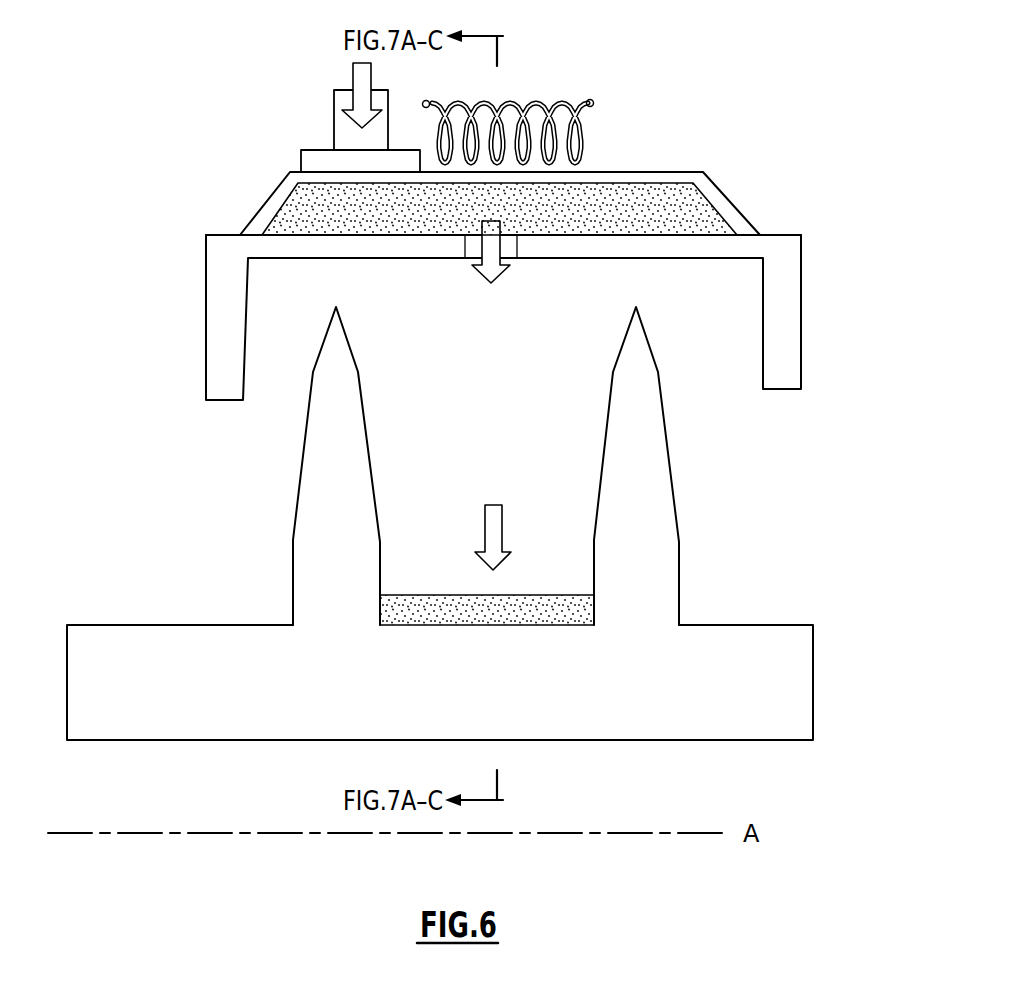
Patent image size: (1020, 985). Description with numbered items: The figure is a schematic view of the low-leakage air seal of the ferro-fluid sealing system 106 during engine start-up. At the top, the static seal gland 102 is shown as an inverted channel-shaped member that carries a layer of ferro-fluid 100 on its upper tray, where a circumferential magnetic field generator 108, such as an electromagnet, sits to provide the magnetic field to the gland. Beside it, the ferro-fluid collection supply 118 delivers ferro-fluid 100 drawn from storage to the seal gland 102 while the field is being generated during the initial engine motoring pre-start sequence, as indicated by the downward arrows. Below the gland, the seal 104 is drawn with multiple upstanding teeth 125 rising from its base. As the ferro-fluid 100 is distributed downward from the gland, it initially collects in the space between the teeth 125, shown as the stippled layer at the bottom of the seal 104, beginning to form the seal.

The ferro-fluid 100 is at (690, 209).
The static seal gland 102 is at (802, 308).
The seal 104 is at (246, 578).
The ferro-fluid sealing system 106 is at (238, 72).
The circumferential magnetic field generator 108 is at (565, 102).
The ferro-fluid collection supply 118 is at (340, 118).
The teeth 125 is at (358, 438).